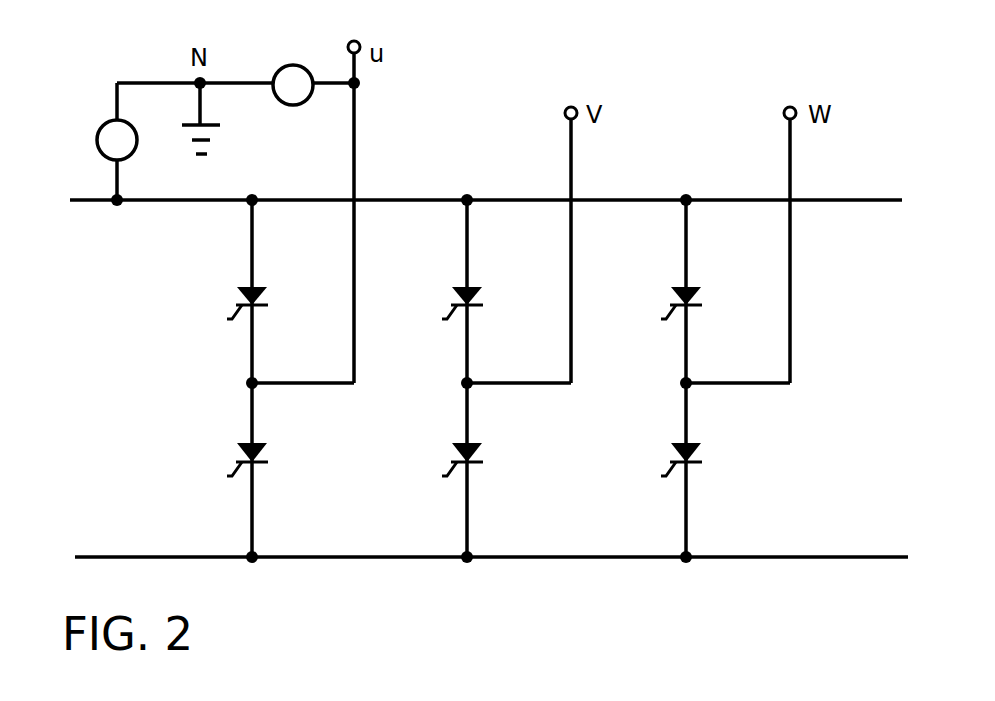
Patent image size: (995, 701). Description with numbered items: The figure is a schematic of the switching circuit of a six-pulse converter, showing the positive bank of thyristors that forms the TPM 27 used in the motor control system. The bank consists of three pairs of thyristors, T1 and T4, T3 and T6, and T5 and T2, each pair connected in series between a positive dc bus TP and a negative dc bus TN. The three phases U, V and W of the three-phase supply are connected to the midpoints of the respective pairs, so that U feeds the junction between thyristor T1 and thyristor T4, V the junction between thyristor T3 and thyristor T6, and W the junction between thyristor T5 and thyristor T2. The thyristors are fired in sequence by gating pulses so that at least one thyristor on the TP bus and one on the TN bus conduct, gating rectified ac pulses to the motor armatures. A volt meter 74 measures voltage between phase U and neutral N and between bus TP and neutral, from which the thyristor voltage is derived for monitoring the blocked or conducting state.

The volt meter 74 is at (108, 128).
The TPM 27 is at (888, 333).
The thyristor T1 is at (247, 290).
The thyristor T2 is at (682, 447).
The thyristor T3 is at (462, 290).
The thyristor T4 is at (247, 447).
The thyristor T5 is at (682, 290).
The thyristor T6 is at (462, 447).